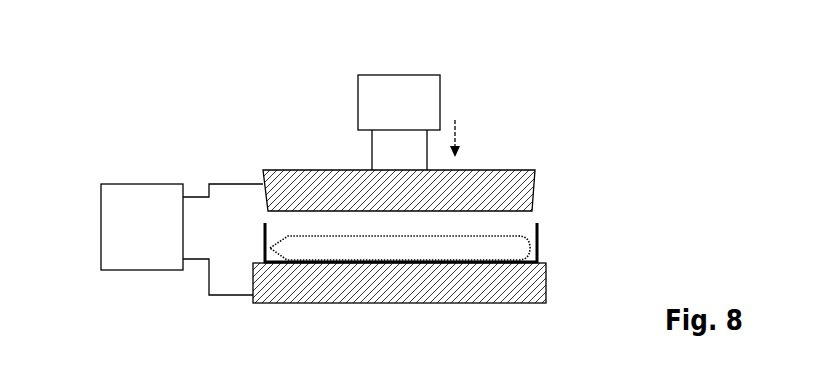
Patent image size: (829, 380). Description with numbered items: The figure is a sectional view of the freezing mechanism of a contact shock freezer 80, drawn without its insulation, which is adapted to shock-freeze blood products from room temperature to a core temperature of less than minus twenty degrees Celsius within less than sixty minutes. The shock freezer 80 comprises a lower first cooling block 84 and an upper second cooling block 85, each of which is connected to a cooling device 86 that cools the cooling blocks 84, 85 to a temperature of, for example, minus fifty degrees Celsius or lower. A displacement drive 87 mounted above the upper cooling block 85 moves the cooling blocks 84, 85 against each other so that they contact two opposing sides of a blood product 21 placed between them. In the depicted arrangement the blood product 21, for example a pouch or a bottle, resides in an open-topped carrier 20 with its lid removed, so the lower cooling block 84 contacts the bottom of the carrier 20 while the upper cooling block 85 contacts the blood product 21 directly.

The shock freezer 80 is at (602, 127).
The displacement drive 87 is at (425, 90).
The second cooling block 85 is at (497, 180).
The cooling device 86 is at (115, 197).
The first cooling block 84 is at (413, 290).
The carrier 20 is at (539, 237).
The blood product 21 is at (524, 235).